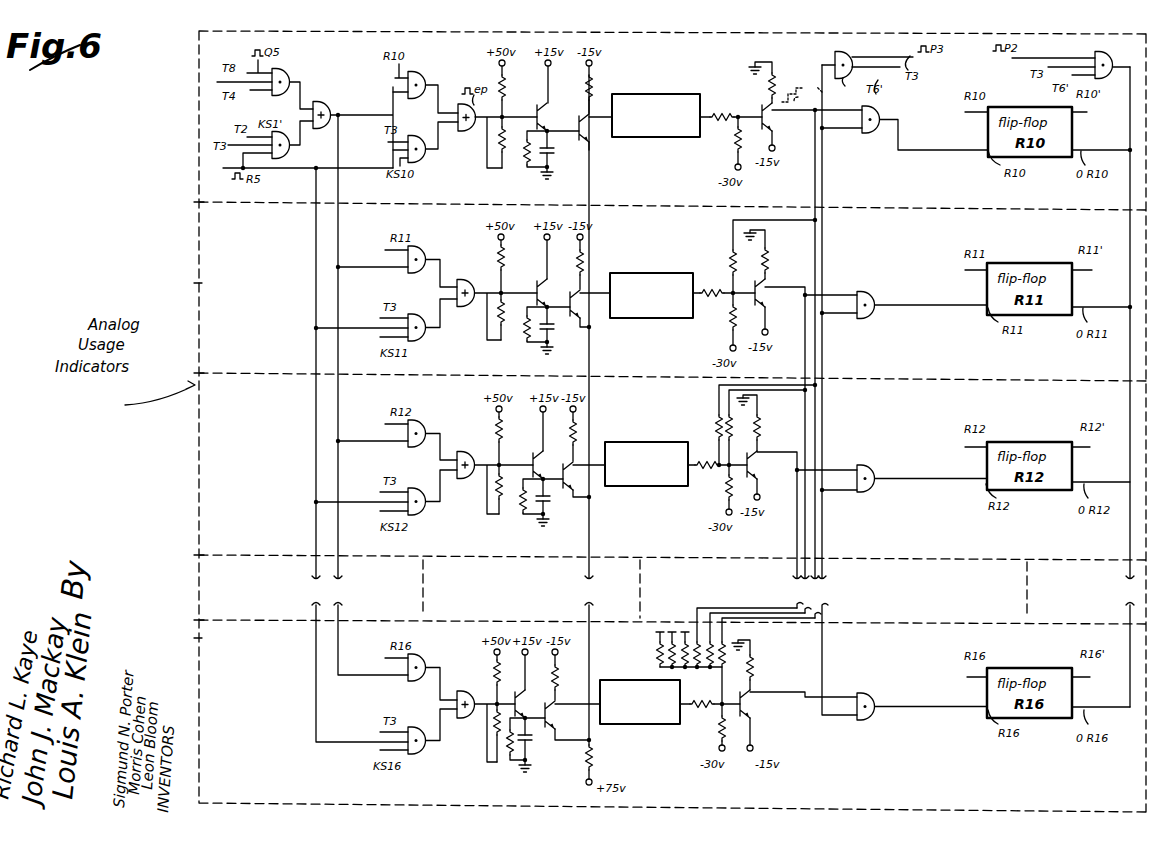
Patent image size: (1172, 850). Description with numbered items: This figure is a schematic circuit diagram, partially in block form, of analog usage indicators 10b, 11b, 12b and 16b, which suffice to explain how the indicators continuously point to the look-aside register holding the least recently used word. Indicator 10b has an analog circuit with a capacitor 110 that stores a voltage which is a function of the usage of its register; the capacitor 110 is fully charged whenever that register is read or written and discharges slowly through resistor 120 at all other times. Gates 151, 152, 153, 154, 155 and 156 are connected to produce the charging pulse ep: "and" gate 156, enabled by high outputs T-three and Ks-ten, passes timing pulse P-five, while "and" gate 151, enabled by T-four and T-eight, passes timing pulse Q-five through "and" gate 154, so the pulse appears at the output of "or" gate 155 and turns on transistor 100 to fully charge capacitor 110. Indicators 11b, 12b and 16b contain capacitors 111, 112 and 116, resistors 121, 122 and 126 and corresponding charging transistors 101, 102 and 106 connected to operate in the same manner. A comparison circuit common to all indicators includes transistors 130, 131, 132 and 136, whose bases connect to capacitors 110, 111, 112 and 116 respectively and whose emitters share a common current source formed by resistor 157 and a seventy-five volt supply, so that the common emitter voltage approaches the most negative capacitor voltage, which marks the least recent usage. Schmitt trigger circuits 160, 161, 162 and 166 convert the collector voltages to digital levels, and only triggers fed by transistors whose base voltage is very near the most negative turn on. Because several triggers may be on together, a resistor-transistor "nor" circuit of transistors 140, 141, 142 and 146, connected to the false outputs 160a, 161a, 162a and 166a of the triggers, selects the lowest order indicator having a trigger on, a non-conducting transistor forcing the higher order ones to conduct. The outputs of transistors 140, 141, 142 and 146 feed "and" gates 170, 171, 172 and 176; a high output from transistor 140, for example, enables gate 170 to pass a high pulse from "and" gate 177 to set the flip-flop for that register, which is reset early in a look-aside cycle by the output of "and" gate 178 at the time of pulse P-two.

The analog usage indicator 10b is at (194, 47).
The analog usage indicator 11b is at (194, 282).
The analog usage indicator 12b is at (164, 433).
The analog usage indicator 16b is at (194, 638).
The "and" gate 151 is at (288, 84).
The gate 152 is at (330, 110).
The gate 153 is at (288, 155).
The "and" gate 154 is at (422, 76).
The "or" gate 155 is at (490, 128).
The "and" gate 156 is at (421, 135).
The transistor 100 is at (545, 112).
The capacitor 110 is at (554, 159).
The resistor 120 is at (526, 158).
The transistor 130 is at (590, 139).
The Schmitt trigger circuit 160 is at (673, 90).
The false output 160a is at (708, 114).
The transistor 140 is at (773, 119).
The "and" gate 170 is at (869, 134).
The "and" gate 177 is at (867, 78).
The "and" gate 178 is at (1106, 58).
The transistor 101 is at (543, 290).
The capacitor 111 is at (550, 340).
The resistor 121 is at (524, 331).
The transistor 131 is at (589, 317).
The Schmitt trigger circuit 161 is at (659, 268).
The false output 161a is at (695, 287).
The transistor 141 is at (765, 307).
The "and" gate 171 is at (864, 321).
The transistor 102 is at (539, 462).
The capacitor 112 is at (546, 515).
The resistor 122 is at (521, 509).
The transistor 132 is at (592, 487).
The Schmitt trigger circuit 162 is at (649, 437).
The false output 162a is at (690, 475).
The transistor 142 is at (758, 479).
The "and" gate 172 is at (866, 493).
The transistor 106 is at (516, 700).
The capacitor 116 is at (532, 754).
The resistor 126 is at (509, 758).
The transistor 136 is at (542, 709).
The resistor 157 is at (592, 759).
The Schmitt trigger circuit 166 is at (632, 669).
The false output 166a is at (672, 717).
The transistor 146 is at (755, 711).
The "and" gate 176 is at (870, 697).